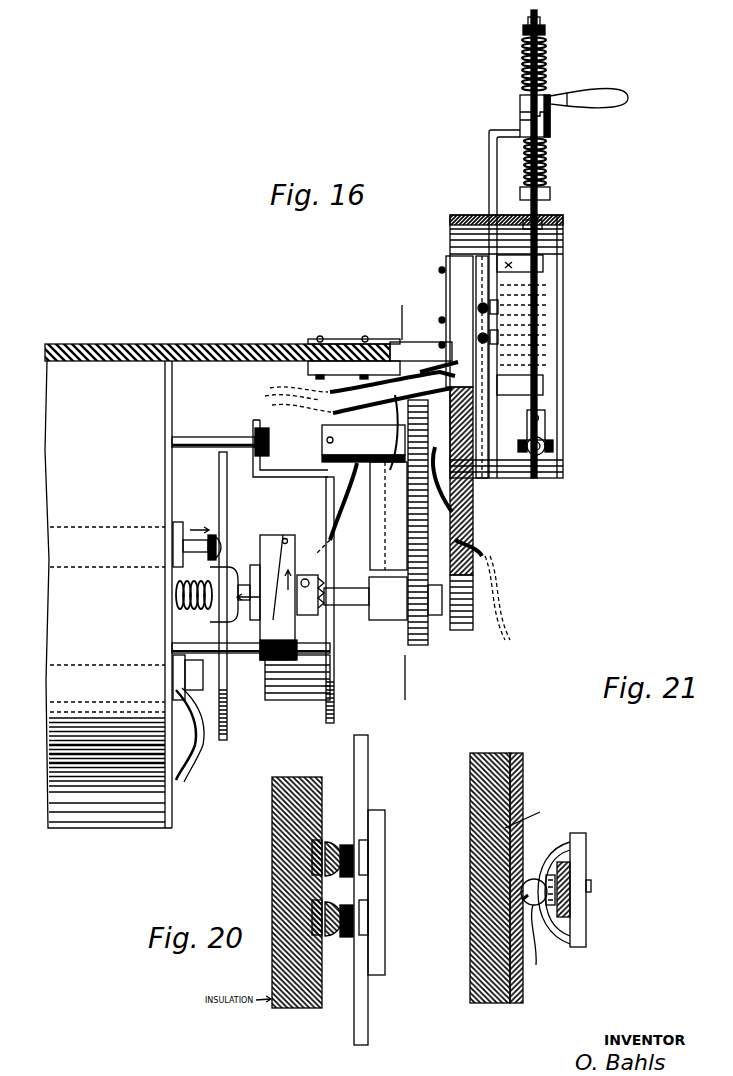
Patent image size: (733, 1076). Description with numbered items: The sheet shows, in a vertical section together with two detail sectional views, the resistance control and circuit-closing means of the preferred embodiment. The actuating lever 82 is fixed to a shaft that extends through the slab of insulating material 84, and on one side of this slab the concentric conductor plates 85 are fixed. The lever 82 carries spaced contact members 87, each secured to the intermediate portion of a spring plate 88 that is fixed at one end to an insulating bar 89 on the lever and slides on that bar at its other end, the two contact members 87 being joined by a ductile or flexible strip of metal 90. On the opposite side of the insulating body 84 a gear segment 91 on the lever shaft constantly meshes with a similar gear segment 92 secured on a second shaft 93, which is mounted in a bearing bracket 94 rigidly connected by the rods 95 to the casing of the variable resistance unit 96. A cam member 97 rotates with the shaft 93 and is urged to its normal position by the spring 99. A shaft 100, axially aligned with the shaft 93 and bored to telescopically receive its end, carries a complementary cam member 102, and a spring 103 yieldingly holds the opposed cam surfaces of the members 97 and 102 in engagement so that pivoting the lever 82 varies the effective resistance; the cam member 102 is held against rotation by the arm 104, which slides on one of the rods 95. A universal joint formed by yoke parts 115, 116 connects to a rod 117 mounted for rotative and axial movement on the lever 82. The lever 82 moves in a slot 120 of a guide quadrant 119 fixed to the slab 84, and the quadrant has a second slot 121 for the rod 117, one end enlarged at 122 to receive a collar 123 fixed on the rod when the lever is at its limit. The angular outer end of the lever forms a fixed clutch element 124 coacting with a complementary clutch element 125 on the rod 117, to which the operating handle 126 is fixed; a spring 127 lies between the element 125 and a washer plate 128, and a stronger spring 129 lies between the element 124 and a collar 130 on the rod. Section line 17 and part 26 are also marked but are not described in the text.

In FIG. 16, the section line 17 is at (411, 489).
In FIG. 16, the plate 26 is at (244, 562).
In FIG. 16, the actuating lever 82 is at (489, 182).
In FIG. 20, the actuating lever 82 is at (366, 1010).
In FIG. 21, the actuating lever 82 is at (570, 908).
In FIG. 16, the slab of insulating material 84 is at (478, 556).
In FIG. 20, the slab of insulating material 84 is at (312, 802).
In FIG. 21, the slab of insulating material 84 is at (495, 784).
In FIG. 20, the concentric conductor plates 85 is at (312, 862).
In FIG. 21, the concentric conductor plates 85 is at (478, 880).
In FIG. 16, the contact members 87 is at (490, 306).
In FIG. 21, the contact members 87 is at (543, 941).
In FIG. 16, the spring plate 88 is at (486, 336).
In FIG. 21, the spring plate 88 is at (580, 930).
In FIG. 16, the insulating bar 89 is at (498, 314).
In FIG. 20, the insulating bar 89 is at (381, 932).
In FIG. 21, the insulating bar 89 is at (586, 848).
In FIG. 20, the ductile or flexible strip of metal 90 is at (352, 898).
In FIG. 16, the gear segment 91 is at (455, 488).
In FIG. 16, the gear segment 92 is at (424, 645).
In FIG. 16, the second shaft 93 is at (475, 603).
In FIG. 16, the bearing bracket 94 is at (334, 645).
In FIG. 16, the rods 95 is at (218, 436).
In FIG. 16, the variable resistance unit 96 is at (66, 627).
In FIG. 16, the cam member 97 is at (297, 657).
In FIG. 16, the spring 99 is at (316, 592).
In FIG. 16, the shaft 100 is at (176, 598).
In FIG. 16, the complementary cam member 102 is at (278, 668).
In FIG. 16, the spring 103 is at (178, 618).
In FIG. 16, the arm 104 is at (242, 656).
In FIG. 16, the yoke part 115 is at (552, 438).
In FIG. 16, the yoke part 116 is at (545, 430).
In FIG. 16, the rod 117 is at (540, 208).
In FIG. 16, the guide quadrant 119 is at (555, 332).
In FIG. 16, the slot 120 is at (450, 217).
In FIG. 16, the second slot 121 is at (527, 222).
In FIG. 16, the enlarged end of slot 122 is at (546, 384).
In FIG. 16, the collar 123 is at (545, 228).
In FIG. 16, the fixed clutch element 124 is at (547, 128).
In FIG. 16, the complementary clutch element 125 is at (520, 106).
In FIG. 16, the operating handle 126 is at (592, 104).
In FIG. 16, the spring 127 is at (547, 62).
In FIG. 16, the washer plate 128 is at (545, 36).
In FIG. 16, the second relatively stronger spring 129 is at (547, 181).
In FIG. 16, the collar 130 is at (550, 196).